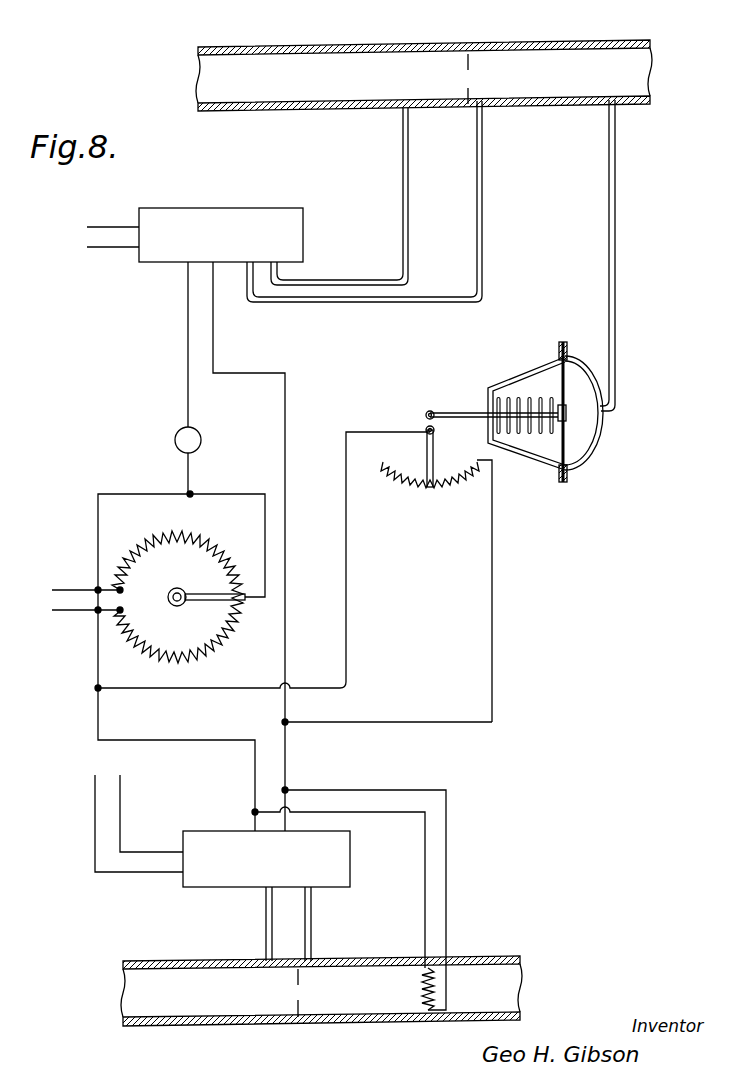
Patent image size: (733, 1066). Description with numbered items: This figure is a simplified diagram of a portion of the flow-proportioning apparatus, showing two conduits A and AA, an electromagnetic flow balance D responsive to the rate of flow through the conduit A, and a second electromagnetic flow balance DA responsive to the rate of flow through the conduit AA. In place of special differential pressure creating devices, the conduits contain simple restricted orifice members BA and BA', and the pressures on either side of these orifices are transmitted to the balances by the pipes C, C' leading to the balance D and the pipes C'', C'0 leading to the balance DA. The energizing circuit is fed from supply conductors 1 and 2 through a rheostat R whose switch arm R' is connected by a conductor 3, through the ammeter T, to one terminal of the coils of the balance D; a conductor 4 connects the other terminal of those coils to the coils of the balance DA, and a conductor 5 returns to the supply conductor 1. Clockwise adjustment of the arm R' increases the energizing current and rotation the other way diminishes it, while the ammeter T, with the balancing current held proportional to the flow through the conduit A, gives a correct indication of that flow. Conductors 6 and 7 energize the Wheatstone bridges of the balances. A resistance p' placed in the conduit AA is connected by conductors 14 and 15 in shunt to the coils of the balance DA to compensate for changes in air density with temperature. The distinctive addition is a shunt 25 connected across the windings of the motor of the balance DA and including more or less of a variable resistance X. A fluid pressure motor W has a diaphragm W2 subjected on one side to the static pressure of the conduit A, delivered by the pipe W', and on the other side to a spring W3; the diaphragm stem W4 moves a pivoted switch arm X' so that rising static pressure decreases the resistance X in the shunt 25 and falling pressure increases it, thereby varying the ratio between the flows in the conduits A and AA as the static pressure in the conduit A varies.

The conduit A is at (421, 46).
The restricted orifice member BA is at (497, 57).
The pipe C is at (382, 201).
The pipe C' is at (339, 196).
The pipe C'' is at (247, 924).
The pipe C'0 is at (333, 924).
The fluid pressure motor W is at (563, 420).
The pipe W' is at (586, 255).
The diaphragm W2 is at (574, 358).
The spring W3 is at (538, 432).
The stem W4 is at (460, 412).
The variable resistance X is at (436, 591).
The pivoted switch arm X' is at (448, 449).
The rheostat R is at (262, 561).
The switch arm R' is at (216, 616).
The ammeter T is at (188, 440).
The electromagnetic flow balance D is at (221, 235).
The electromagnetic flow balance DA is at (266, 859).
The conduit AA is at (501, 958).
The restricted orifice member BA' is at (270, 1016).
The resistance p' is at (412, 990).
The supply conductor 1 is at (70, 590).
The supply conductor 2 is at (80, 612).
The conductor 3 is at (186, 368).
The conductor 4 is at (287, 563).
The conductor 5 is at (202, 742).
The conductor 6 is at (113, 208).
The conductor 7 is at (113, 267).
The conductor 14 is at (425, 895).
The conductor 15 is at (447, 843).
The shunt 25 is at (376, 690).